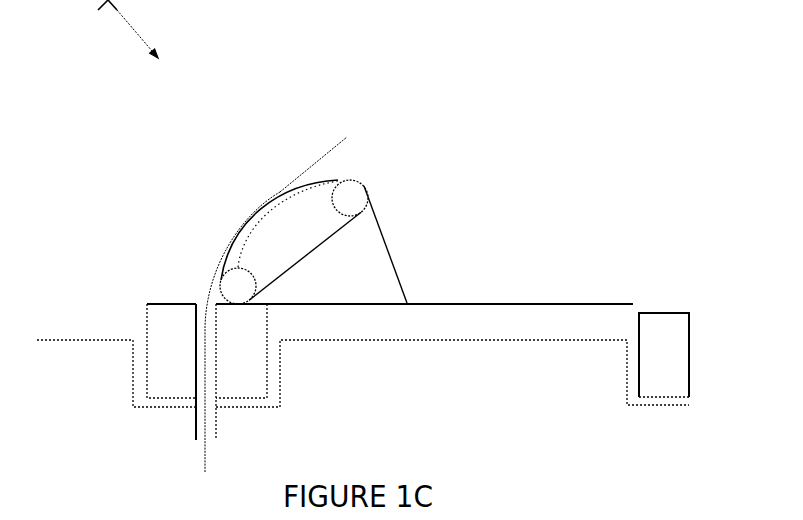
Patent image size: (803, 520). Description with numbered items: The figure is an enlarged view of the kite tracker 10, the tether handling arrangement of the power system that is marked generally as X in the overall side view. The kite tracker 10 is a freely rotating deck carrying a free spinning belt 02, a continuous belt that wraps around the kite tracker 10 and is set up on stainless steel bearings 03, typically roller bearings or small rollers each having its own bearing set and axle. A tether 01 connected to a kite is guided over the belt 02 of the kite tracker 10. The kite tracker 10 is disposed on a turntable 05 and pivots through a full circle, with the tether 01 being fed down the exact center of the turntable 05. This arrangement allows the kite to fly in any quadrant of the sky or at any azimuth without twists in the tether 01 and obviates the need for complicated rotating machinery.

The tether 01 is at (331, 134).
The belt 02 is at (345, 173).
The bearings 03 is at (324, 171).
The turntable 05 is at (458, 290).
The kite tracker 10 is at (250, 191).